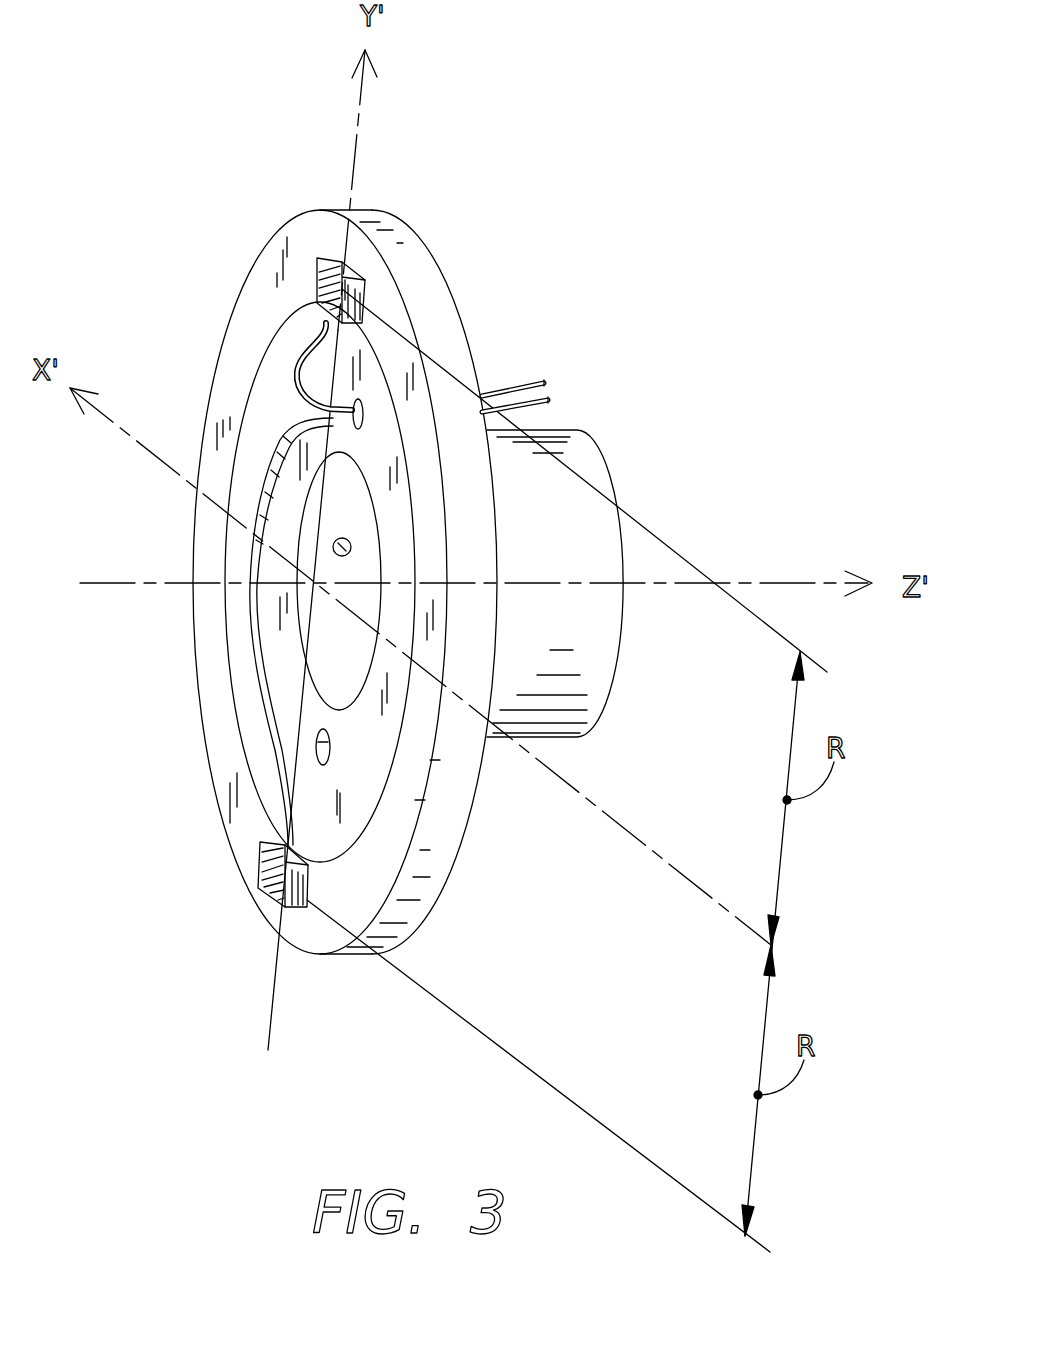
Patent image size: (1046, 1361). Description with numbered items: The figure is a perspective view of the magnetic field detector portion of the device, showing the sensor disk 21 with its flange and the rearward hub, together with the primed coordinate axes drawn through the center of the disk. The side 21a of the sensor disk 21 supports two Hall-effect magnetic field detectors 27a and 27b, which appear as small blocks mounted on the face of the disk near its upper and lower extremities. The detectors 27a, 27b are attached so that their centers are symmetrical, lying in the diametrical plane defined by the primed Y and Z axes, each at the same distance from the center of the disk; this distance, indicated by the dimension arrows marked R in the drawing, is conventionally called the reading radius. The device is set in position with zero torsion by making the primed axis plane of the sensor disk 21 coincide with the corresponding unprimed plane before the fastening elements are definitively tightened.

The sensor disk 21 is at (437, 200).
The side of sensor disk 21a is at (252, 303).
The Hall-effect magnetic field detector 27a is at (327, 258).
The Hall-effect magnetic field detector 27b is at (270, 902).